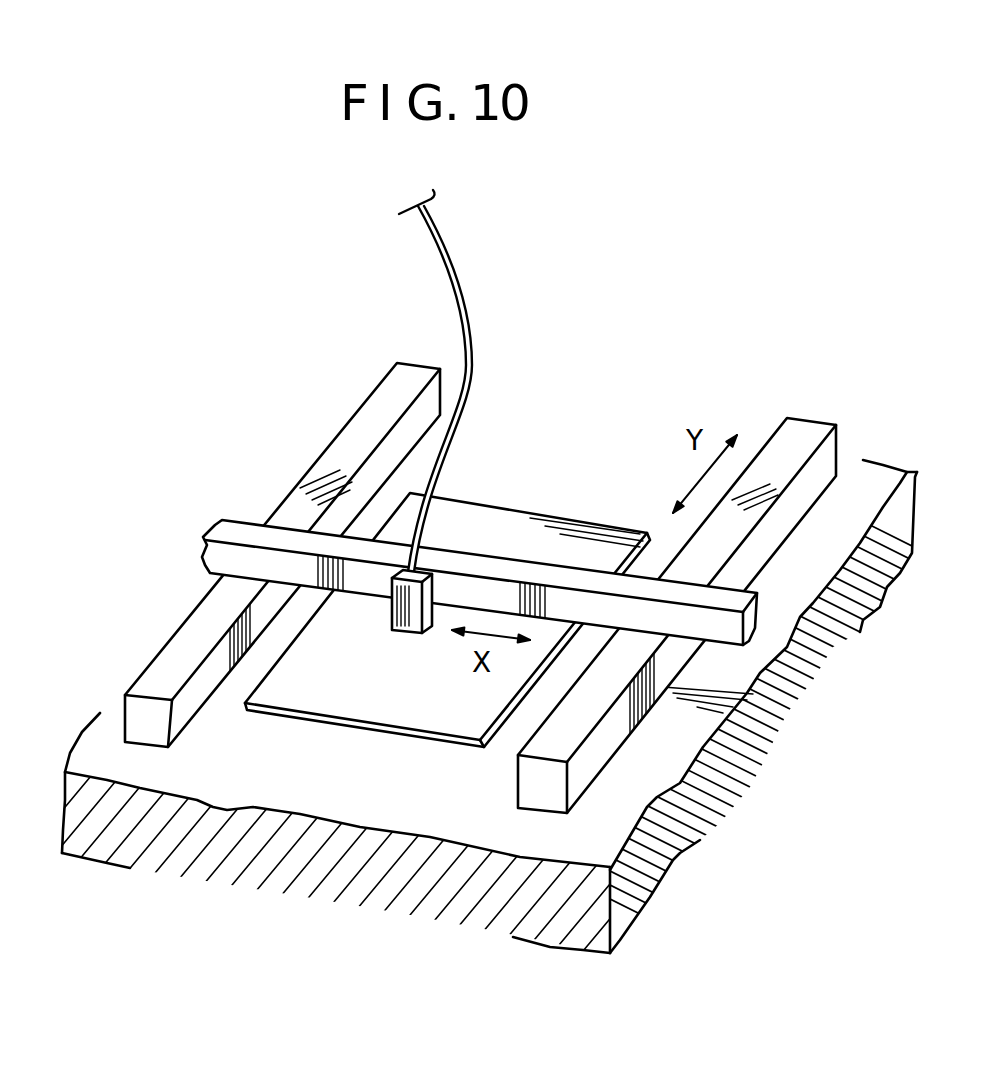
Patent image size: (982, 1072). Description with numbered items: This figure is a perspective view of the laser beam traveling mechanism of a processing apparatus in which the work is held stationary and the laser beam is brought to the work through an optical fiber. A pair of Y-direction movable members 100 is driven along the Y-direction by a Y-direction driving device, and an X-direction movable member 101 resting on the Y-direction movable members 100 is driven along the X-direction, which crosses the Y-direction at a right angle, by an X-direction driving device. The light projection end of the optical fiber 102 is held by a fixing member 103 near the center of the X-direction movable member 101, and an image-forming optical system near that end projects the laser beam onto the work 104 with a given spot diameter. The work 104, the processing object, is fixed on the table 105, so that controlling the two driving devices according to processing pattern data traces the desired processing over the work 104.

The Y-direction movable members 100 is at (331, 457).
The X-direction movable member 101 is at (248, 528).
The optical fiber 102 is at (471, 326).
The fixing member 103 is at (398, 614).
The work 104 is at (456, 714).
The table 105 is at (620, 810).